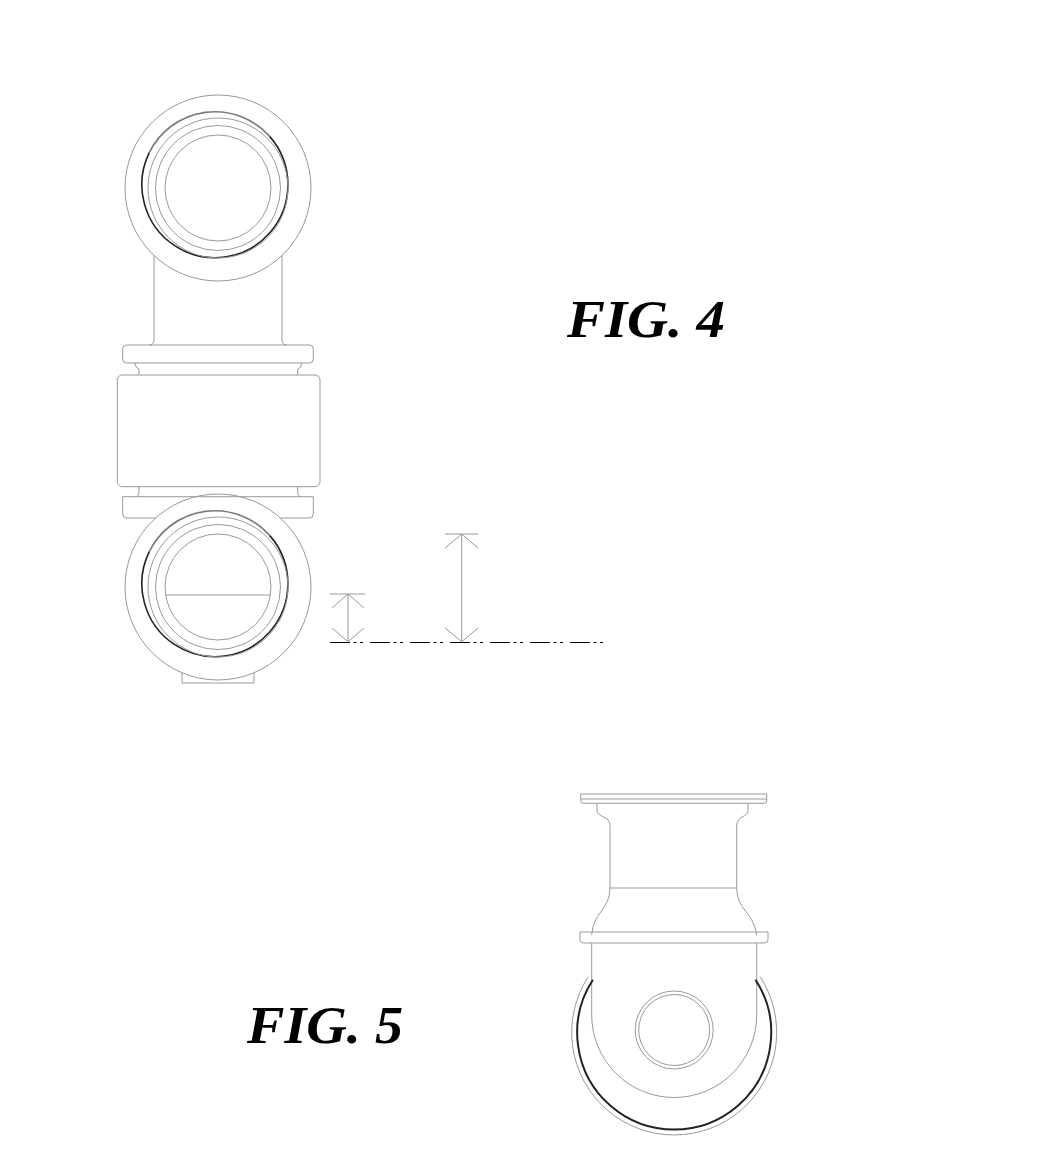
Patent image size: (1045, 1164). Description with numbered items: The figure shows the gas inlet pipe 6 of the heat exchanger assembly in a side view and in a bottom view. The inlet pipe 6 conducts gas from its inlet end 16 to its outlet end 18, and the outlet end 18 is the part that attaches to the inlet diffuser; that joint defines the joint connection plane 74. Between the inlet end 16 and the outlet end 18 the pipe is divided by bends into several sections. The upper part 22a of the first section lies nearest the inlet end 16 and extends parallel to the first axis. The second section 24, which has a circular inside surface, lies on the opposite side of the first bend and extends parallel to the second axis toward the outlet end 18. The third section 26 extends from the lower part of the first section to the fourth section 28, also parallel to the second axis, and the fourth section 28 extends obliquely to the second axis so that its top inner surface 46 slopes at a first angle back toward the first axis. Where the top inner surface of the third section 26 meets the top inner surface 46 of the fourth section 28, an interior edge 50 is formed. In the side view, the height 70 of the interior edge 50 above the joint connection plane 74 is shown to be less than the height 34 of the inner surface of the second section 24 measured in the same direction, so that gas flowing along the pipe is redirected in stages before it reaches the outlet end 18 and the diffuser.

In FIG. 4, the gas inlet pipe 6 is at (448, 210).
In FIG. 5, the gas inlet pipe 6 is at (854, 685).
In FIG. 4, the inlet end 16 is at (297, 187).
In FIG. 4, the outlet end 18 is at (153, 645).
In FIG. 5, the outlet end 18 is at (748, 798).
In FIG. 4, the upper part of first section 22a is at (177, 318).
In FIG. 5, the second section 24 is at (713, 852).
In FIG. 5, the third section 26 is at (725, 917).
In FIG. 5, the fourth section 28 is at (733, 983).
In FIG. 4, the height of inner surface of second section 34 is at (475, 588).
In FIG. 4, the top inner surface of fourth section 46 is at (233, 567).
In FIG. 4, the interior edge 50 is at (183, 595).
In FIG. 4, the offset dimension 70 is at (365, 618).
In FIG. 4, the joint connection plane 74 is at (492, 640).